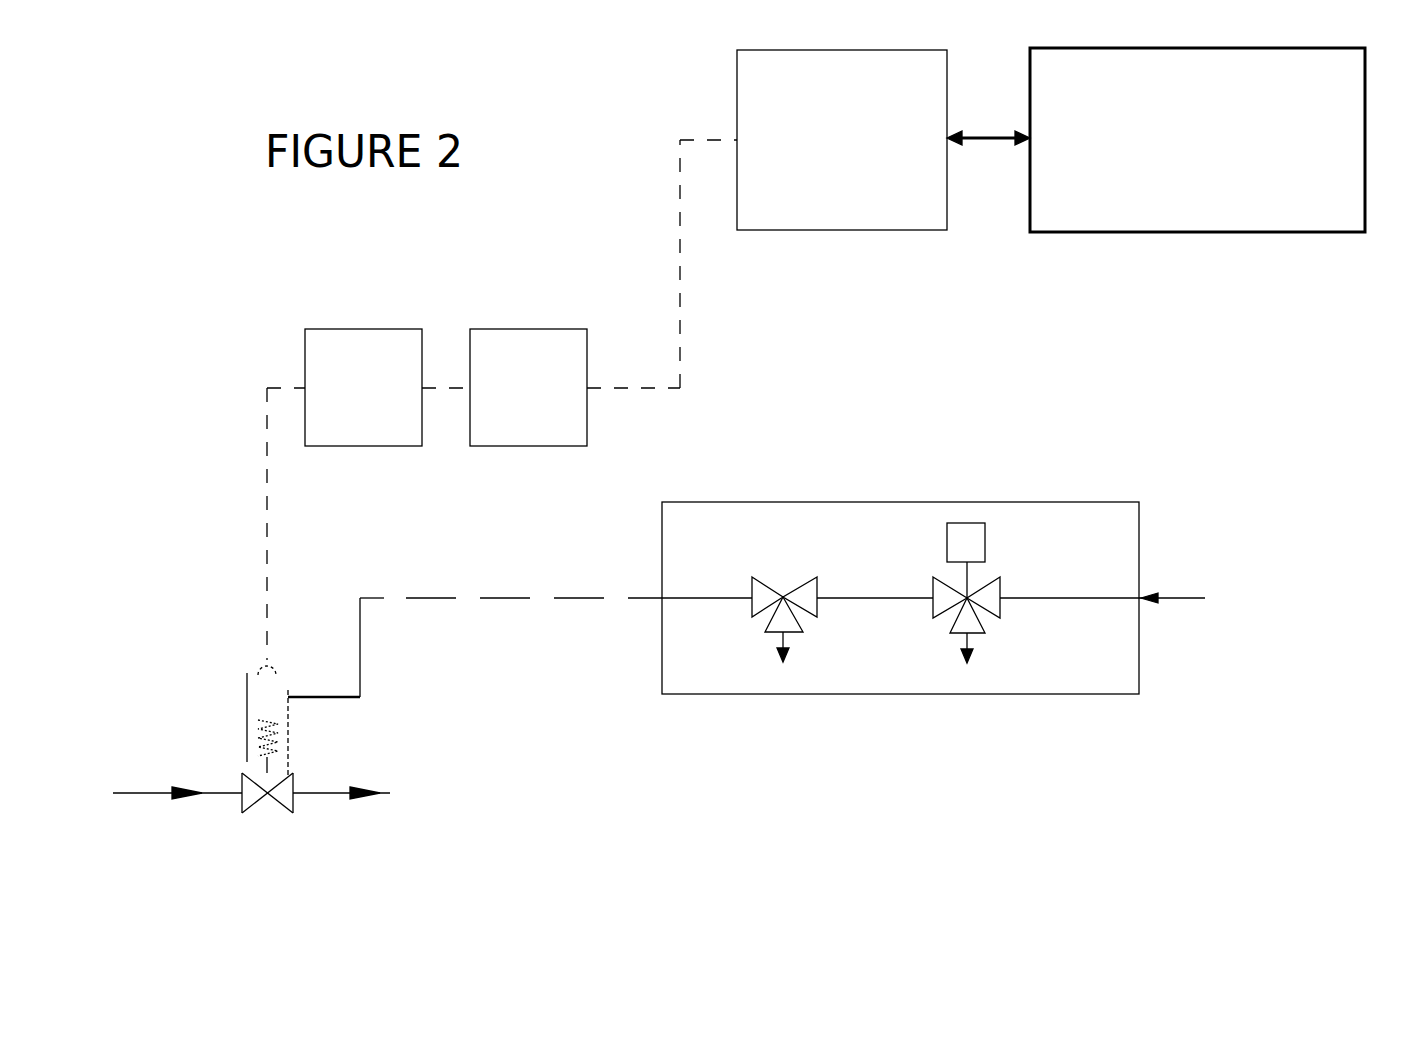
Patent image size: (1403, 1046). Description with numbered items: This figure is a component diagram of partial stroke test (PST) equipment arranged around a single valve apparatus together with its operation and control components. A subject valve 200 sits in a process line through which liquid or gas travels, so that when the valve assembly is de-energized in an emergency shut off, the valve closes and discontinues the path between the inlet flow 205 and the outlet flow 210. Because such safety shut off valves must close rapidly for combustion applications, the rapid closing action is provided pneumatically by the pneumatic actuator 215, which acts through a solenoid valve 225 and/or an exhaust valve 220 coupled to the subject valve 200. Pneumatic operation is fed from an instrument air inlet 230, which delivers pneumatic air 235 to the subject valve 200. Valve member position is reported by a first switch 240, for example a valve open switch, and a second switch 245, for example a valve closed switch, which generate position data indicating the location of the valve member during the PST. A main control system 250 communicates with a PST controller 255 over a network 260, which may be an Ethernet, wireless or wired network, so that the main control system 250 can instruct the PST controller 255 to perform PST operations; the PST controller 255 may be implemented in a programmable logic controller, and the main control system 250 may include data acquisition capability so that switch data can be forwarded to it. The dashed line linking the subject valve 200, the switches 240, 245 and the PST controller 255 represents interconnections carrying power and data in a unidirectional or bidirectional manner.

The subject valve 200 is at (273, 817).
The inlet flow 205 is at (173, 816).
The outlet flow 210 is at (346, 816).
The pneumatic actuator 215 is at (1082, 648).
The exhaust valve 220 is at (784, 609).
The solenoid valve 225 is at (996, 603).
The instrument air inlet 230 is at (1200, 652).
The pneumatic air 235 is at (506, 599).
The first switch 240 is at (363, 387).
The second switch 245 is at (528, 387).
The main control system 250 is at (1230, 218).
The PST controller 255 is at (842, 140).
The network 260 is at (988, 143).